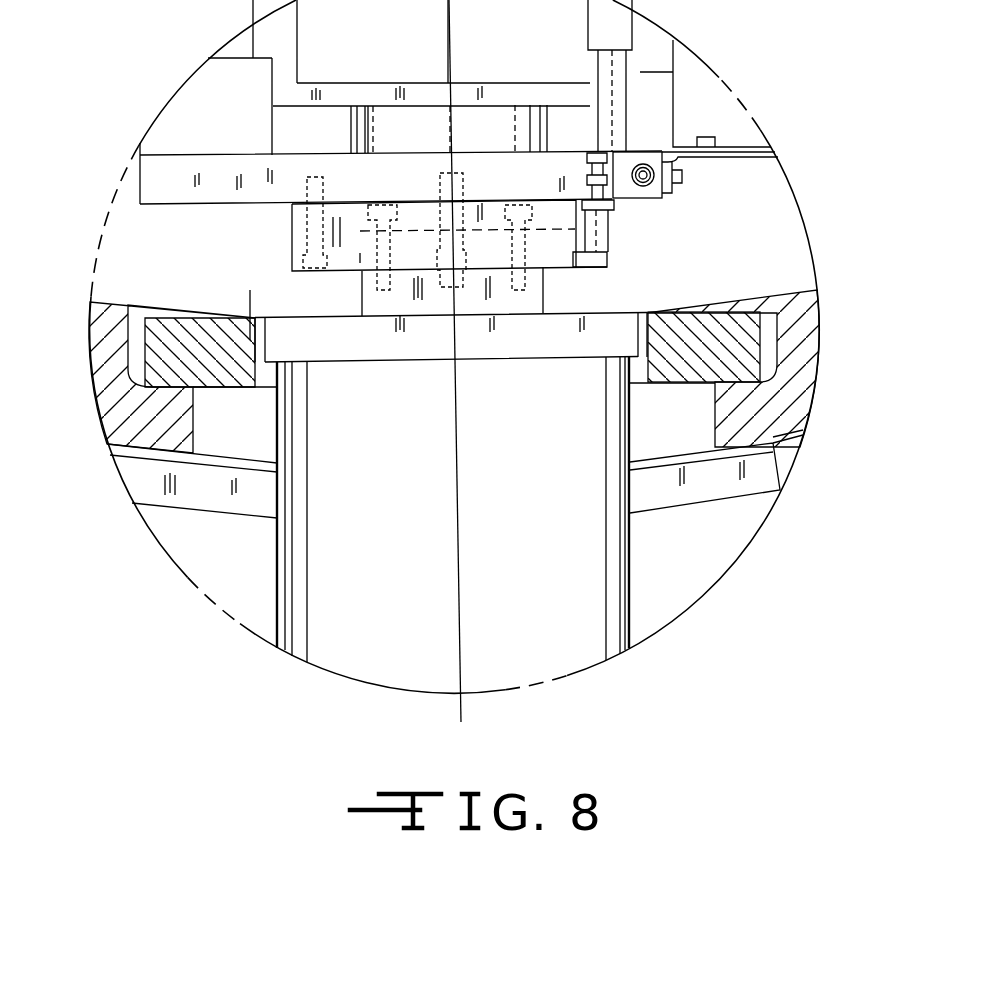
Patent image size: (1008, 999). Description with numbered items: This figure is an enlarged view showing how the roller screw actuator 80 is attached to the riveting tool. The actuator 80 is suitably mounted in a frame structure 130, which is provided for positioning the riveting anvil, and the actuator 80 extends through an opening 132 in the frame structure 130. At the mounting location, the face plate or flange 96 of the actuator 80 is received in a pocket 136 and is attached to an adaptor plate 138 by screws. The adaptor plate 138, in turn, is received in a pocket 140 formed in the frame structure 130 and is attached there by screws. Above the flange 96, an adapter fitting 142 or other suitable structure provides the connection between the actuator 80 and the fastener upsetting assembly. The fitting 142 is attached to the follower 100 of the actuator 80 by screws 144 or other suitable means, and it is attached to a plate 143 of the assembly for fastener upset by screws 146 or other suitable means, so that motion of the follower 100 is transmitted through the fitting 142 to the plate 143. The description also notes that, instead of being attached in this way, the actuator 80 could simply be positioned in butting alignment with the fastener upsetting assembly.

The roller screw actuator 80 is at (584, 640).
The face plate or flange 96 is at (390, 368).
The follower 100 is at (550, 292).
The frame structure 130 is at (796, 405).
The opening 132 is at (660, 414).
The pocket 136 is at (268, 333).
The adaptor plate 138 is at (134, 355).
The pocket 140 is at (757, 372).
The adapter fitting 142 is at (284, 226).
The plate 143 is at (134, 188).
The screws 144 is at (366, 228).
The screws 146 is at (436, 166).